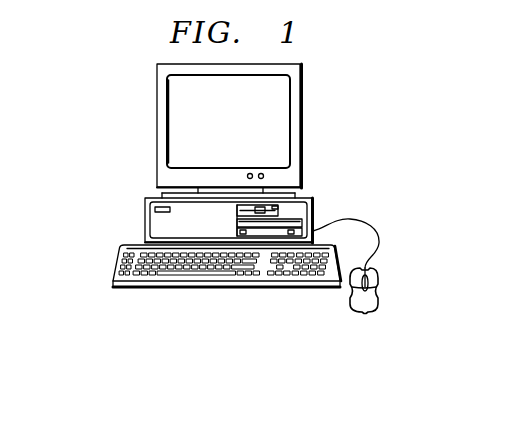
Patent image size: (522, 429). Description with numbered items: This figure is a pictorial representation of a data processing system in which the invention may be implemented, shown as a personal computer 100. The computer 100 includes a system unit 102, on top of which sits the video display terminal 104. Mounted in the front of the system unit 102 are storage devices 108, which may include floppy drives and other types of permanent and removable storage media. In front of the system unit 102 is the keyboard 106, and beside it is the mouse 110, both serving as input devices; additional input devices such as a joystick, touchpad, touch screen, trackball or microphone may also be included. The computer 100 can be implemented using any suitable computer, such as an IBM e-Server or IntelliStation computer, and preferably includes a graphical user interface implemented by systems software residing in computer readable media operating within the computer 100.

The computer 100 is at (116, 85).
The system unit 102 is at (145, 218).
The video display terminal 104 is at (302, 110).
The keyboard 106 is at (142, 288).
The storage devices 108 is at (285, 212).
The mouse 110 is at (365, 314).